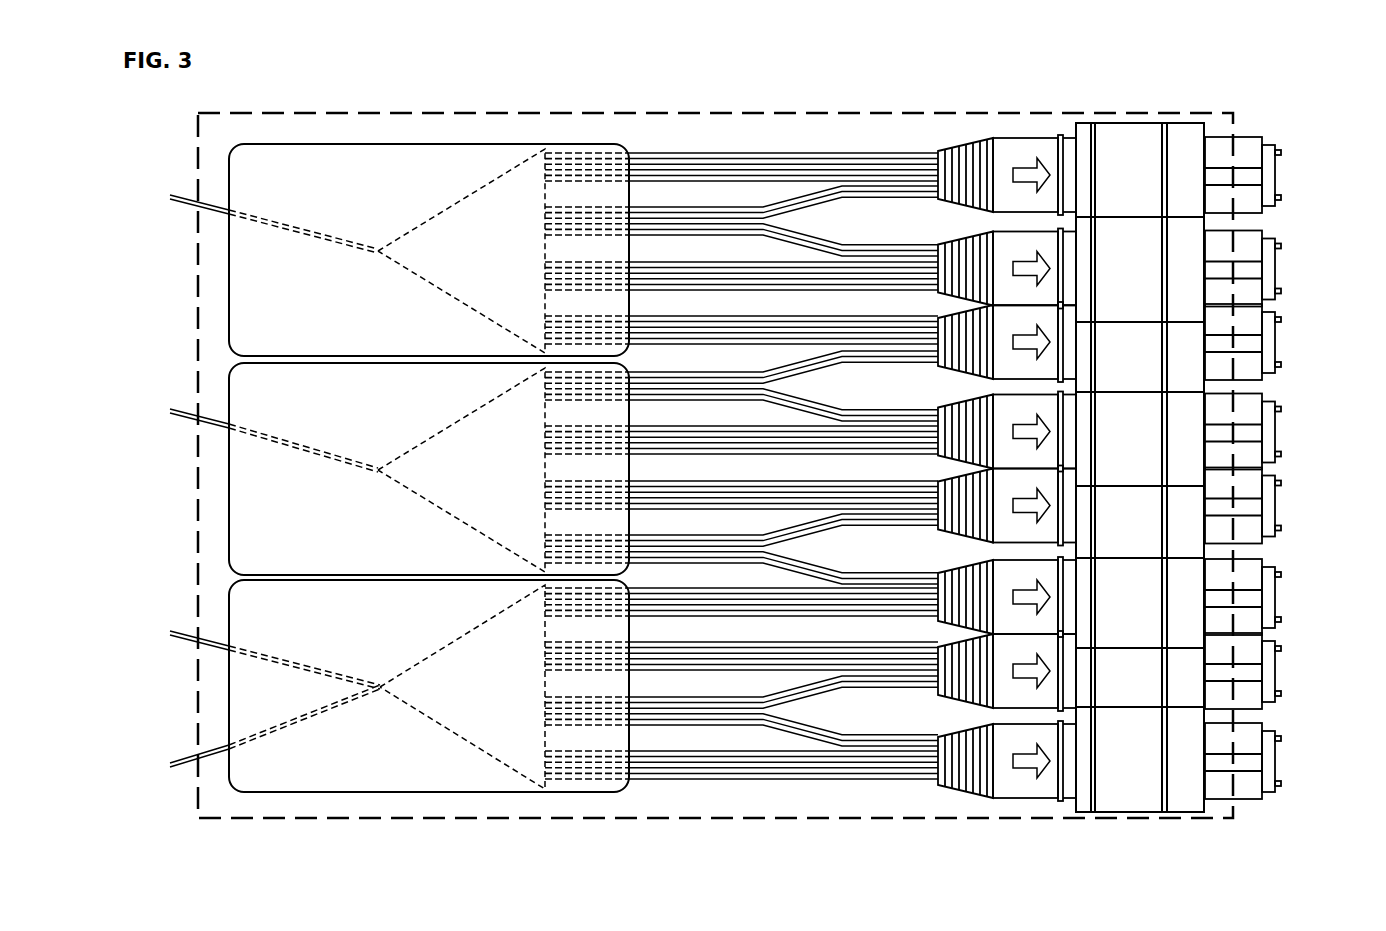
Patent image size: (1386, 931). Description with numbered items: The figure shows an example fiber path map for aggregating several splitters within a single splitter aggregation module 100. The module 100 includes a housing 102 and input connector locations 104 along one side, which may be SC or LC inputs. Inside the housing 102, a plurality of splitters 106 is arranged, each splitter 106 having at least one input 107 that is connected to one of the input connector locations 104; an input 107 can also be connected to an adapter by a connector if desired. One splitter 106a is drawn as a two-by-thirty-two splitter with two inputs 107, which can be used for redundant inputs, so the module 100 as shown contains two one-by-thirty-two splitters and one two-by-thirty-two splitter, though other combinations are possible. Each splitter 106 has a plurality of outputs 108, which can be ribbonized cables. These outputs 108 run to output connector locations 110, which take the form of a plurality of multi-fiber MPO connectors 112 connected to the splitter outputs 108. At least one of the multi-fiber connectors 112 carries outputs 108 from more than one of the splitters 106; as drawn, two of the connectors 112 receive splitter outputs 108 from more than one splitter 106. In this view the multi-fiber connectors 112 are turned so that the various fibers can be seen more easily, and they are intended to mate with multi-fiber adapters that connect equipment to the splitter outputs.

The splitter aggregation module 100 is at (577, 98).
The housing 102 is at (420, 111).
The input connector locations 104 is at (183, 197).
The splitters 106 is at (429, 458).
The 2×32 splitter 106a is at (417, 791).
The input 107 is at (324, 232).
The outputs 108 is at (645, 153).
The output connector locations 110 is at (1267, 125).
The multi-fiber connectors 112 is at (1110, 122).